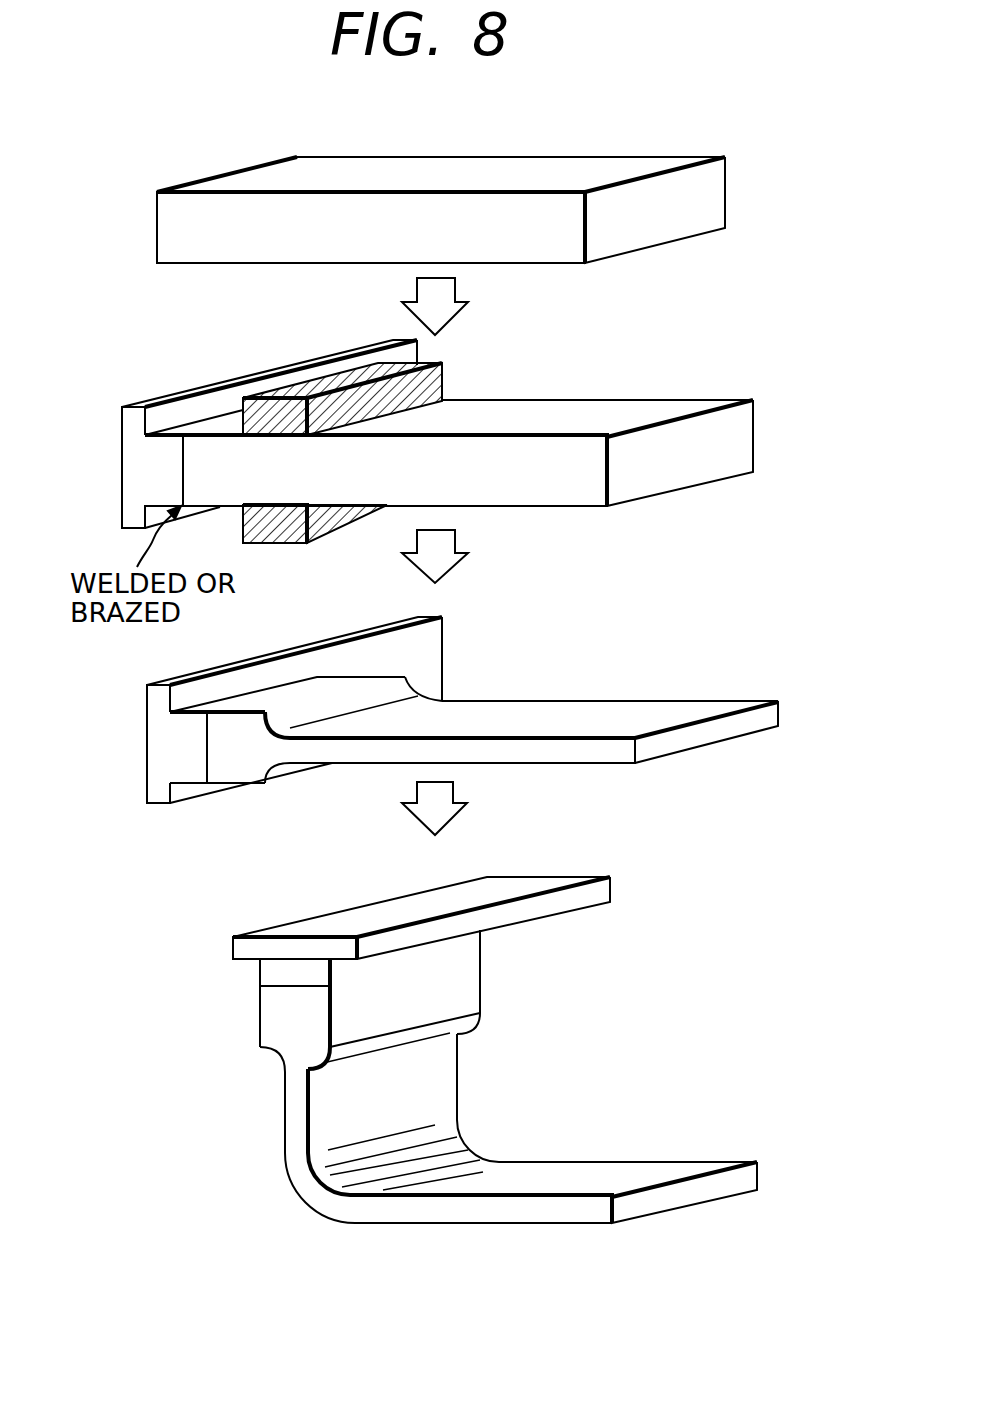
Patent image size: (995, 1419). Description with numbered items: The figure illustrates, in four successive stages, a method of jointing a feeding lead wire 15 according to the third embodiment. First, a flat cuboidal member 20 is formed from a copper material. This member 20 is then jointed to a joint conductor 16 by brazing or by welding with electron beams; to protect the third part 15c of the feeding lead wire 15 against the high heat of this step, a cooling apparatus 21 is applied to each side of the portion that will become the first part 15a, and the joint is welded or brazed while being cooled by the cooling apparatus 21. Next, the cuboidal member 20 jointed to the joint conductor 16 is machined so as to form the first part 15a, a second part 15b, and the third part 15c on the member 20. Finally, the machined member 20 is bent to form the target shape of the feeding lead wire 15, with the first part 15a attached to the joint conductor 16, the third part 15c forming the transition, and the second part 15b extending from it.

The feeding lead wire 15 is at (608, 1170).
The first part 15a is at (228, 775).
The second part 15b is at (525, 750).
The third part 15c is at (287, 750).
The joint conductor 16 is at (138, 458).
The flat cuboidal member 20 is at (645, 160).
The cooling apparatus 21 is at (443, 383).